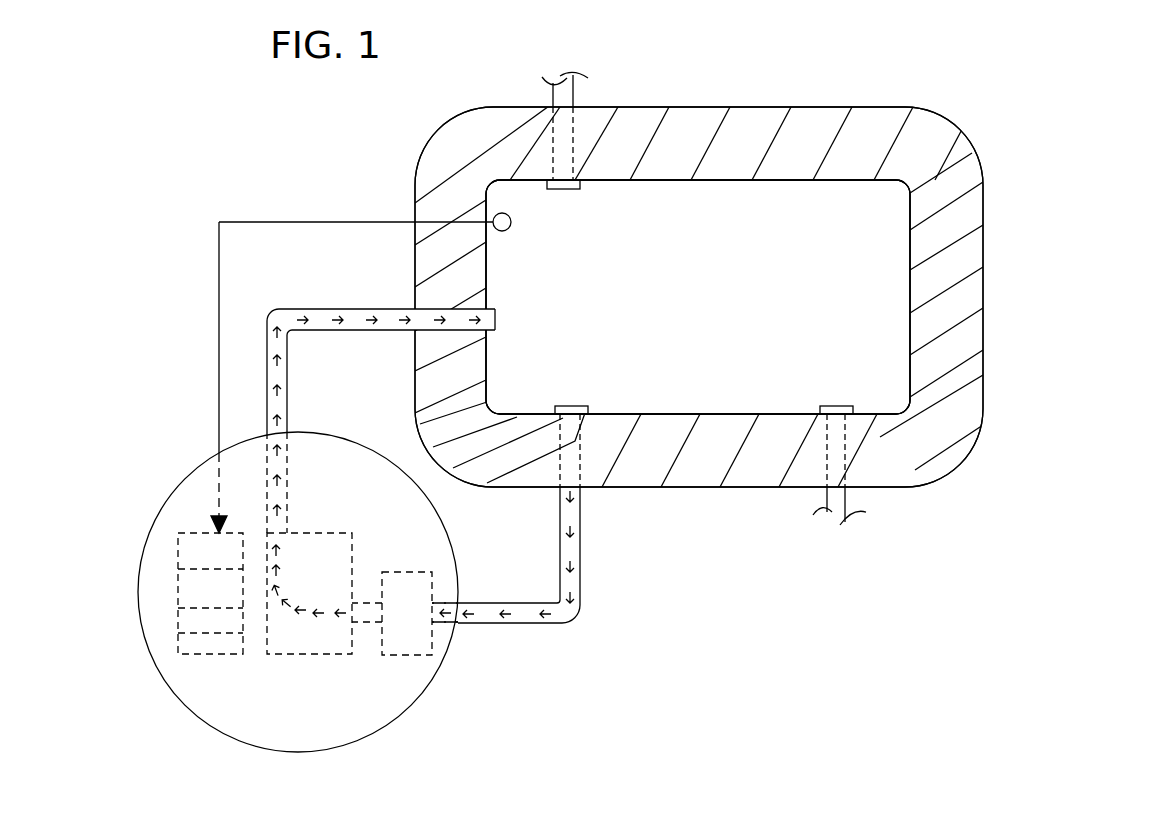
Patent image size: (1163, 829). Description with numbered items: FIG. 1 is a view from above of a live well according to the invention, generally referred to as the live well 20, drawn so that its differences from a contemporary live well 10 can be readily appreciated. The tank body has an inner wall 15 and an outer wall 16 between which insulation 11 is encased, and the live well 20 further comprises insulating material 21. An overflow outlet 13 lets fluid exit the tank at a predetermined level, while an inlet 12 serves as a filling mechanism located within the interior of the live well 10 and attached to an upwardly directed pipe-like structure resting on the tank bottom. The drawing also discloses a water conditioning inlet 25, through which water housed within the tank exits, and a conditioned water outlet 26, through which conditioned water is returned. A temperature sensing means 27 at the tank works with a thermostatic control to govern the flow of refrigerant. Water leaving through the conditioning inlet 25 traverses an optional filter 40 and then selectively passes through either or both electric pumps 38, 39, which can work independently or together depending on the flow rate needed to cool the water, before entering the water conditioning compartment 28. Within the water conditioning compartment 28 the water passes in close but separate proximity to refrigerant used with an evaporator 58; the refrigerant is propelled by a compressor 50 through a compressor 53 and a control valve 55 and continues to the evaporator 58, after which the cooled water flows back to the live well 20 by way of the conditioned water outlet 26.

The live well 10 is at (845, 302).
The insulation 11 is at (955, 127).
The filling mechanism 12 is at (847, 500).
The overflow outlet 13 is at (578, 97).
The inner wall 15 is at (837, 183).
The outer wall 16 is at (840, 107).
The live well 20 is at (1002, 342).
The insulating material 21 is at (940, 373).
The water conditioning inlet 25 is at (580, 407).
The conditioned water outlet 26 is at (500, 309).
The temperature sensing means 27 is at (512, 220).
The water conditioning compartment 28 is at (357, 707).
The electric pump 38 is at (418, 587).
The electric pump 39 is at (418, 628).
The filter 40 is at (420, 648).
The compressor 50 is at (192, 543).
The compressor 53 is at (175, 615).
The control valve 55 is at (170, 648).
The evaporator 58 is at (190, 588).